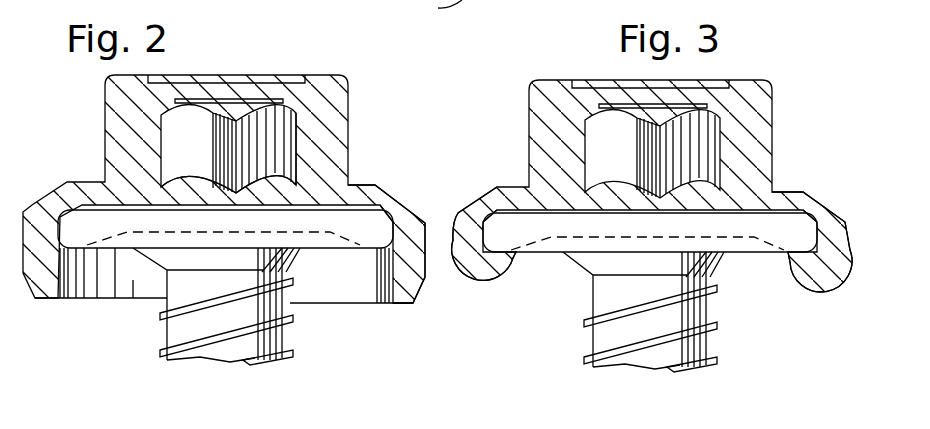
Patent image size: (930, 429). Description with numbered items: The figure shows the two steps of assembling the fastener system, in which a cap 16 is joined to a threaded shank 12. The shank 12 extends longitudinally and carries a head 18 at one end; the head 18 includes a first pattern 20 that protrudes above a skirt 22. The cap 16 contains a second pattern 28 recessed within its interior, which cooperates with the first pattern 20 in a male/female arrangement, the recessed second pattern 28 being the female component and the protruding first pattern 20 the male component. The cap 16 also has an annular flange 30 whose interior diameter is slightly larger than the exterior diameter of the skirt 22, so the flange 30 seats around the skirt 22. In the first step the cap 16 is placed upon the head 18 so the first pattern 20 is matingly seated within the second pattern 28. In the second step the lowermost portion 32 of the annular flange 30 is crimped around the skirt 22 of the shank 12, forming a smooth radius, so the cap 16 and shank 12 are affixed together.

In FIG. 2, the shank 12 is at (308, 280).
In FIG. 3, the shank 12 is at (736, 287).
In FIG. 2, the cap 16 is at (338, 146).
In FIG. 3, the cap 16 is at (760, 122).
In FIG. 2, the head 18 is at (330, 177).
In FIG. 2, the first pattern 20 is at (277, 133).
In FIG. 3, the skirt 22 is at (560, 247).
In FIG. 2, the second pattern 28 is at (300, 123).
In FIG. 2, the annular flange 30 is at (425, 300).
In FIG. 3, the annular flange 30 is at (847, 222).
In FIG. 3, the lowermost portion 32 is at (805, 278).